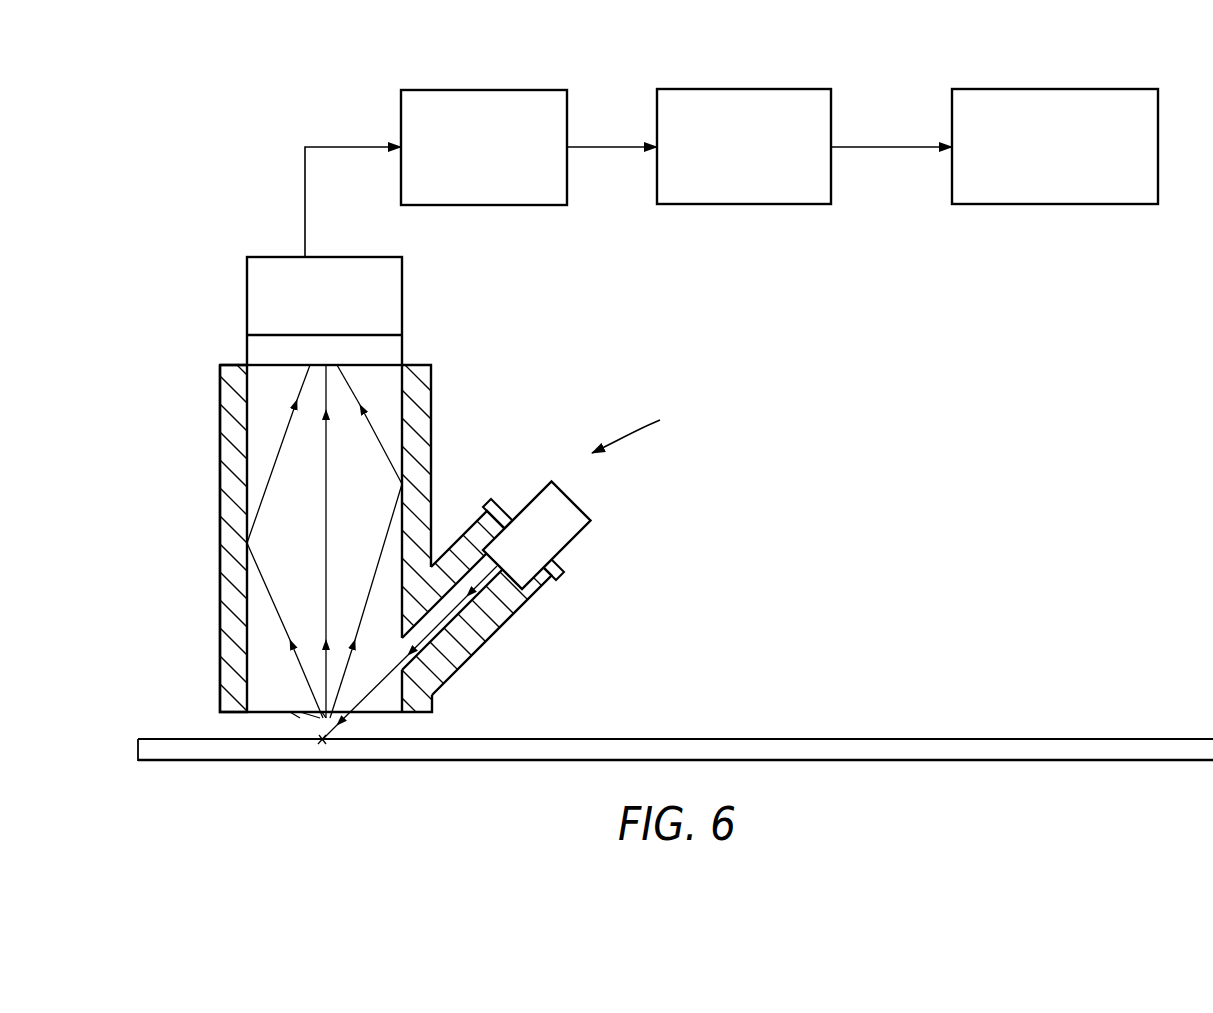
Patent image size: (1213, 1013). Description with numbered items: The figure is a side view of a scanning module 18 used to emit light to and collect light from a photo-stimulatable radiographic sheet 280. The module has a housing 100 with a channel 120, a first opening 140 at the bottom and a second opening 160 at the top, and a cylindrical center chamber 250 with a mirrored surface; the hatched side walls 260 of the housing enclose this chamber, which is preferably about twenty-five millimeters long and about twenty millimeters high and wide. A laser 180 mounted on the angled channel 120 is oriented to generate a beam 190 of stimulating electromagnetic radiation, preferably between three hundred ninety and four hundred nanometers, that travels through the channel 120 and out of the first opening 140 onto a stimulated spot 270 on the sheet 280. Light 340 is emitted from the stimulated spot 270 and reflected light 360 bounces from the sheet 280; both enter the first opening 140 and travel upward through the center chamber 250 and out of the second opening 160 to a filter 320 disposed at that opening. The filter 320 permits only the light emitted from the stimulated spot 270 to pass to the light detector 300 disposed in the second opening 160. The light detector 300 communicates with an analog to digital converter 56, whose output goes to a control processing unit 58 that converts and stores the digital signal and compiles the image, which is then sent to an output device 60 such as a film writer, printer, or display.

The analog to digital converter 56 is at (513, 88).
The control processing unit 58 is at (765, 88).
The output device 60 is at (1038, 88).
The light detector 300 is at (403, 273).
The filter 320 is at (403, 346).
The second opening 160 is at (282, 364).
The housing side wall 260 is at (246, 414).
The housing 100 is at (414, 530).
The center chamber 250 is at (260, 676).
The channel 120 is at (453, 625).
The laser 180 is at (568, 540).
The laser beam 190 is at (368, 698).
The stimulated spot 270 is at (320, 740).
The first opening 140 is at (280, 712).
The emitted light 340 is at (325, 492).
The reflected light 360 is at (377, 557).
The photo-stimulatable radiographic sheet 280 is at (777, 738).
The scanning module 18 is at (641, 426).